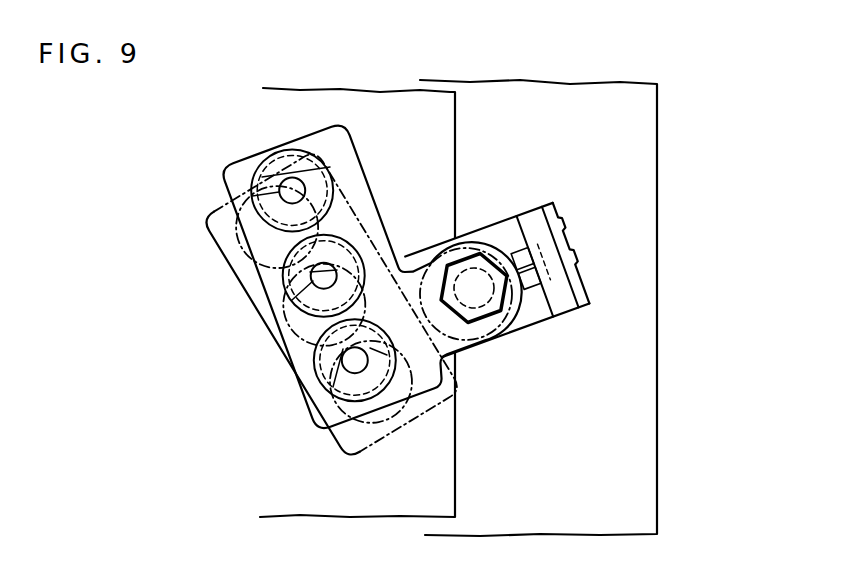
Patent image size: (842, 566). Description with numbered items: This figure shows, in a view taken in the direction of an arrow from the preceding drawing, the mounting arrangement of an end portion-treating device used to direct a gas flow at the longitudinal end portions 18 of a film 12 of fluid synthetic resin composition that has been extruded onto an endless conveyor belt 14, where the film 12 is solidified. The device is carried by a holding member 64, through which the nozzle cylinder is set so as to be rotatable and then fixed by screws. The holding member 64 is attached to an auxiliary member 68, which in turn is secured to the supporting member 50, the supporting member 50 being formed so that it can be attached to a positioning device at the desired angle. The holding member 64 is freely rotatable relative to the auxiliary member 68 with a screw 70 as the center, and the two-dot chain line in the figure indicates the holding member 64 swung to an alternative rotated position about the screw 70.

The film 12 is at (305, 72).
The conveyor belt 14 is at (627, 127).
The longitudinal end portions 18 is at (448, 117).
The supporting member 50 is at (560, 232).
The holding member 64 is at (333, 137).
The auxiliary member 68 is at (560, 306).
The screw 70 is at (487, 305).